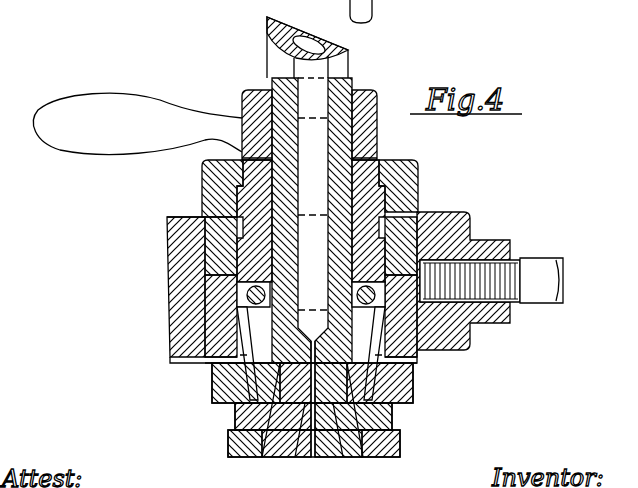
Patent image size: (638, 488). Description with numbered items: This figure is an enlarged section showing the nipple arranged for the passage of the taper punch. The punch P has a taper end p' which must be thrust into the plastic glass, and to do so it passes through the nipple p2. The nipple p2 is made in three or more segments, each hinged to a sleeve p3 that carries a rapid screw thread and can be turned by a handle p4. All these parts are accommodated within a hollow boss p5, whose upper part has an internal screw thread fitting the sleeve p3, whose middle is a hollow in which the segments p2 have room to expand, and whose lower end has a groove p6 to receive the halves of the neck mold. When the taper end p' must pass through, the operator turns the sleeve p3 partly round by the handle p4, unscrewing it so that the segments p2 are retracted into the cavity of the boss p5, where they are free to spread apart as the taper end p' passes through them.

The punch P is at (309, 237).
The taper end of the punch p' is at (312, 423).
The nipple p2 is at (233, 418).
The sleeve p3 is at (203, 185).
The handle p4 is at (137, 123).
The hollow boss p5 is at (205, 280).
The groove p6 is at (320, 396).